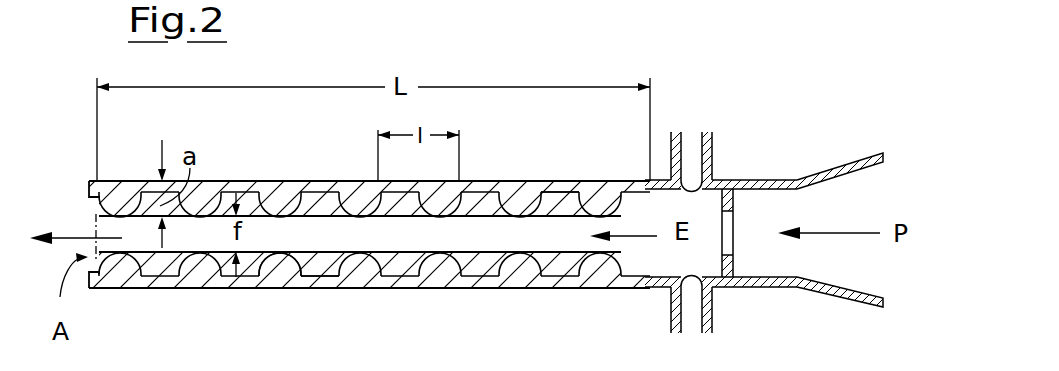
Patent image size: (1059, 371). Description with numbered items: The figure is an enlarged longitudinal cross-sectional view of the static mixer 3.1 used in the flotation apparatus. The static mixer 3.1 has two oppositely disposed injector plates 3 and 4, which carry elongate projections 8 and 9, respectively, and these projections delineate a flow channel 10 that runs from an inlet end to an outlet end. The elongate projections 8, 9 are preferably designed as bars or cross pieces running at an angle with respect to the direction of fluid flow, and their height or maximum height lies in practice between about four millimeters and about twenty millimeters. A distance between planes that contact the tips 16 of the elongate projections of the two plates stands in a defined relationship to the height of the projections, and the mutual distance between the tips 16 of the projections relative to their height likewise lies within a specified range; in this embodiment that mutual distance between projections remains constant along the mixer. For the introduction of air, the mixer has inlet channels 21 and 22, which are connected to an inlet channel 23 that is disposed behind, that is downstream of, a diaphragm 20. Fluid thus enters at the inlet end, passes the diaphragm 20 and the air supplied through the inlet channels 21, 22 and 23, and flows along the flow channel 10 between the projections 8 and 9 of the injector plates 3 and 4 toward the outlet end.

The injector plate 3 is at (80, 198).
The static mixer 3.1 is at (407, 301).
The elongate projections 8 is at (601, 195).
The flow channel 10 is at (596, 223).
The tips of the projections 16 is at (284, 257).
The elongate projections 9 is at (290, 273).
The injector plate 4 is at (541, 312).
The inlet channel 21 is at (712, 143).
The inlet channel 22 is at (712, 317).
The diaphragm 20 is at (755, 208).
The inlet channel 23 is at (863, 152).